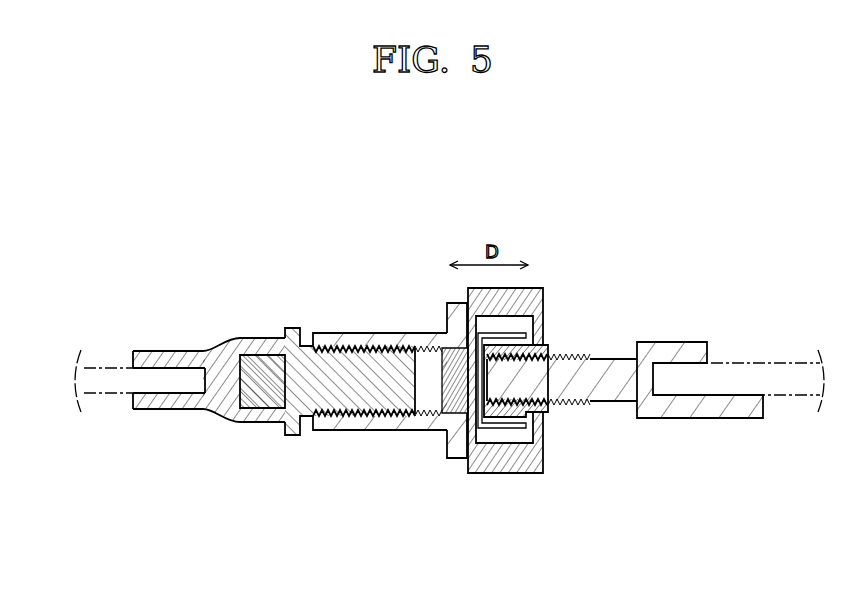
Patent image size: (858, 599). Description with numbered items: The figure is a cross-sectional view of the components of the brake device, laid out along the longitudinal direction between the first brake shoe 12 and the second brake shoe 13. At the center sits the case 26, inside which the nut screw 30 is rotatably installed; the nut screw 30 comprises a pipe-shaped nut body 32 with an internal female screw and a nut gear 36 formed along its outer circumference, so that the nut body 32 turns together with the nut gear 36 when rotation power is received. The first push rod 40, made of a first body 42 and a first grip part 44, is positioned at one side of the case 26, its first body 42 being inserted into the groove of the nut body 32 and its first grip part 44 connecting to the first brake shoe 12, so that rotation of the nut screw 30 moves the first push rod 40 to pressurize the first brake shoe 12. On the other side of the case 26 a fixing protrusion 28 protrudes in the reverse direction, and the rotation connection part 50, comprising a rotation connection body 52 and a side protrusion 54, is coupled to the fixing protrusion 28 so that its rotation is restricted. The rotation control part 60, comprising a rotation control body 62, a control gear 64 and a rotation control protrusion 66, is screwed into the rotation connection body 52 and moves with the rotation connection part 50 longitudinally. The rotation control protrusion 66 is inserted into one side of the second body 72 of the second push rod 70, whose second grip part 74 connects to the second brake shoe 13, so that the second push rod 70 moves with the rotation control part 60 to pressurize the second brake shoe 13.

The first brake shoe 12 is at (795, 368).
The second brake shoe 13 is at (103, 367).
The case 26 is at (535, 298).
The fixing protrusion 28 is at (466, 418).
The nut screw 30 is at (509, 445).
The nut body 32 is at (546, 420).
The nut gear 36 is at (505, 428).
The first push rod 40 is at (625, 431).
The first body 42 is at (597, 393).
The first grip part 44 is at (700, 413).
The rotation connection part 50 is at (390, 417).
The rotation connection body 52 is at (368, 418).
The side protrusion 54 is at (458, 445).
The rotation control part 60 is at (327, 335).
The rotation control body 62 is at (364, 345).
The control gear 64 is at (297, 330).
The rotation control protrusion 66 is at (258, 363).
The second push rod 70 is at (204, 427).
The second body 72 is at (238, 411).
The second grip part 74 is at (165, 410).